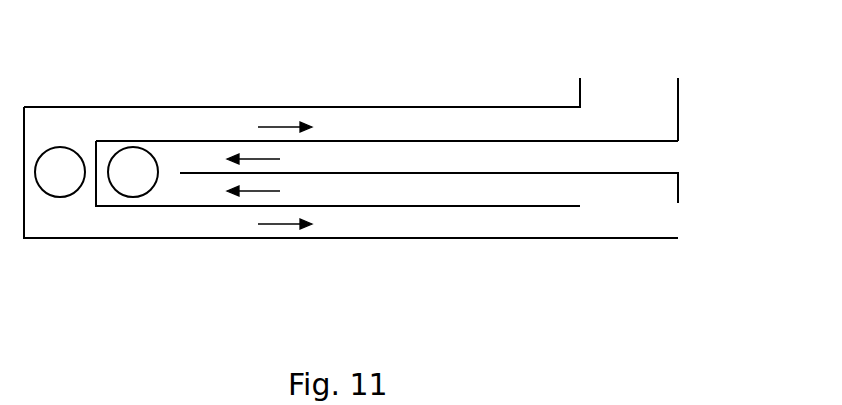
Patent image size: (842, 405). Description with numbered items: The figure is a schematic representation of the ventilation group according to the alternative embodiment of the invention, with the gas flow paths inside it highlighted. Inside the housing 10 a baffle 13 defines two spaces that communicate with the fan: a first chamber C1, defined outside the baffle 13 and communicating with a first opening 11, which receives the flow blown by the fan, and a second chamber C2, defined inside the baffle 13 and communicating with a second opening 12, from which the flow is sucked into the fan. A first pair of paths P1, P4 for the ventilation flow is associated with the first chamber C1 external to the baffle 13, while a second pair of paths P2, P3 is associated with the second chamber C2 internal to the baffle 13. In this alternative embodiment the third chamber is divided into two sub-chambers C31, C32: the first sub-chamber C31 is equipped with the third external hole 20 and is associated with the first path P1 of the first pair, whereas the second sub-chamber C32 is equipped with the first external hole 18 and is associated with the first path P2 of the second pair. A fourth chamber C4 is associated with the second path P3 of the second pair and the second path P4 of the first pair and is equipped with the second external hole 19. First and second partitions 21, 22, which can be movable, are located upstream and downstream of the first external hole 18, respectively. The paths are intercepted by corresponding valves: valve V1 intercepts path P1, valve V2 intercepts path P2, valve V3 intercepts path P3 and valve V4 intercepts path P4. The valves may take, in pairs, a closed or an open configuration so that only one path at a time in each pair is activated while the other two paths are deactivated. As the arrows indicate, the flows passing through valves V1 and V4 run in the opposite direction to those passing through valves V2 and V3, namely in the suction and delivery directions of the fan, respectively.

The housing 10 is at (330, 240).
The first opening 11 is at (67, 165).
The second opening 12 is at (136, 170).
The baffle 13 is at (93, 193).
The first external hole 18 is at (447, 175).
The second external hole 19 is at (657, 225).
The third external hole 20 is at (387, 108).
The first partition 21 is at (660, 141).
The second partition 22 is at (587, 172).
The first chamber C1 is at (61, 215).
The second chamber C2 is at (165, 190).
The first sub-chamber C31 is at (622, 128).
The second sub-chamber C32 is at (622, 162).
The fourth chamber C4 is at (623, 212).
The valve V1 is at (559, 128).
The valve V2 is at (561, 162).
The valve V3 is at (561, 194).
The valve V4 is at (561, 228).
The first path P1 is at (270, 127).
The first path P2 is at (266, 159).
The second path P3 is at (266, 191).
The second path P4 is at (270, 224).